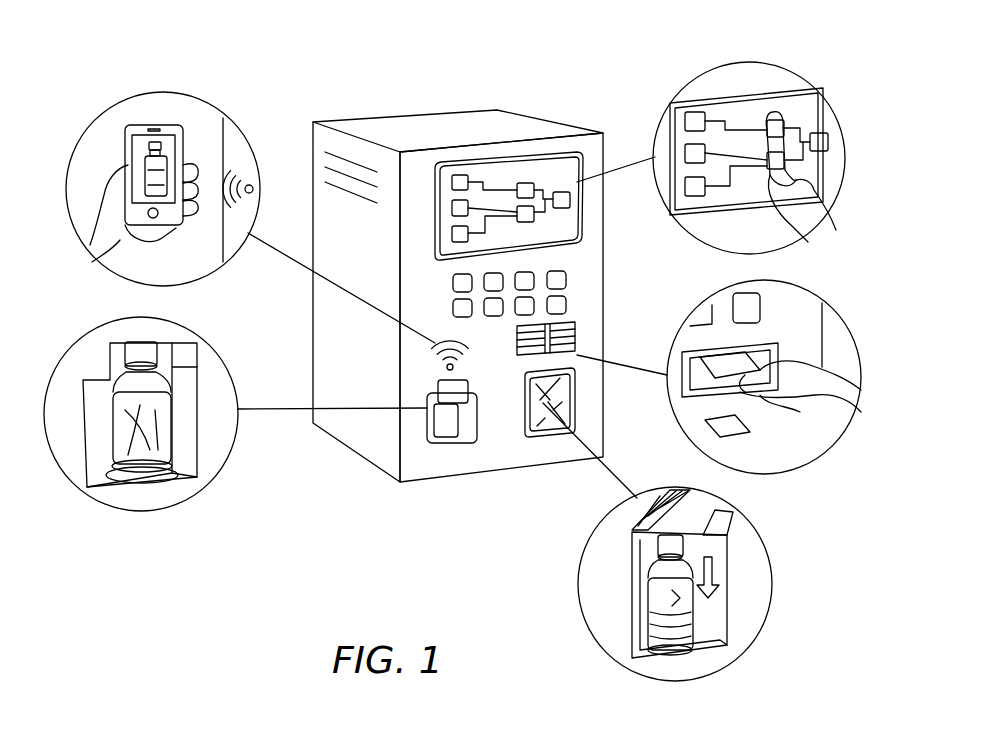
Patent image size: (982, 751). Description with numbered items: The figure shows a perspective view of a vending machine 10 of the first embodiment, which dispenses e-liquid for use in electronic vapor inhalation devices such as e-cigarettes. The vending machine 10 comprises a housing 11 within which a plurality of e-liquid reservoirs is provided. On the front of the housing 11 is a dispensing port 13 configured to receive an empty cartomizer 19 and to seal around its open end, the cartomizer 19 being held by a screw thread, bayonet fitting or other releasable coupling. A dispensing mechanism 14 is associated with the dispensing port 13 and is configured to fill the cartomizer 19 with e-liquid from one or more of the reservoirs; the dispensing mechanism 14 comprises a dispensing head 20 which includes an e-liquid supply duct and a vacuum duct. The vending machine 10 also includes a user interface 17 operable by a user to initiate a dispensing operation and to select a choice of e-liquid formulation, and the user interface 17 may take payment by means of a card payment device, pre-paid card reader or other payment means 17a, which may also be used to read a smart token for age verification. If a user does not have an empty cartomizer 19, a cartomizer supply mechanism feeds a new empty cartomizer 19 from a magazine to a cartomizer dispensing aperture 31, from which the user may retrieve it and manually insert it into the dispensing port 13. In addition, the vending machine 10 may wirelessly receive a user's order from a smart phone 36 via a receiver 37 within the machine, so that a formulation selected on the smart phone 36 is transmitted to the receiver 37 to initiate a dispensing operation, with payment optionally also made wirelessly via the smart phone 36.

The vending machine 10 is at (623, 50).
The housing 11 is at (495, 113).
The dispensing port 13 is at (468, 442).
The dispensing mechanism 14 is at (447, 395).
The user interface 17 is at (577, 305).
The payment means 17a is at (577, 340).
The cartomizer 19 is at (113, 440).
The dispensing head 20 is at (177, 372).
The cartomizer dispensing aperture 31 is at (577, 393).
The smart phone 36 is at (150, 125).
The receiver 37 is at (447, 367).